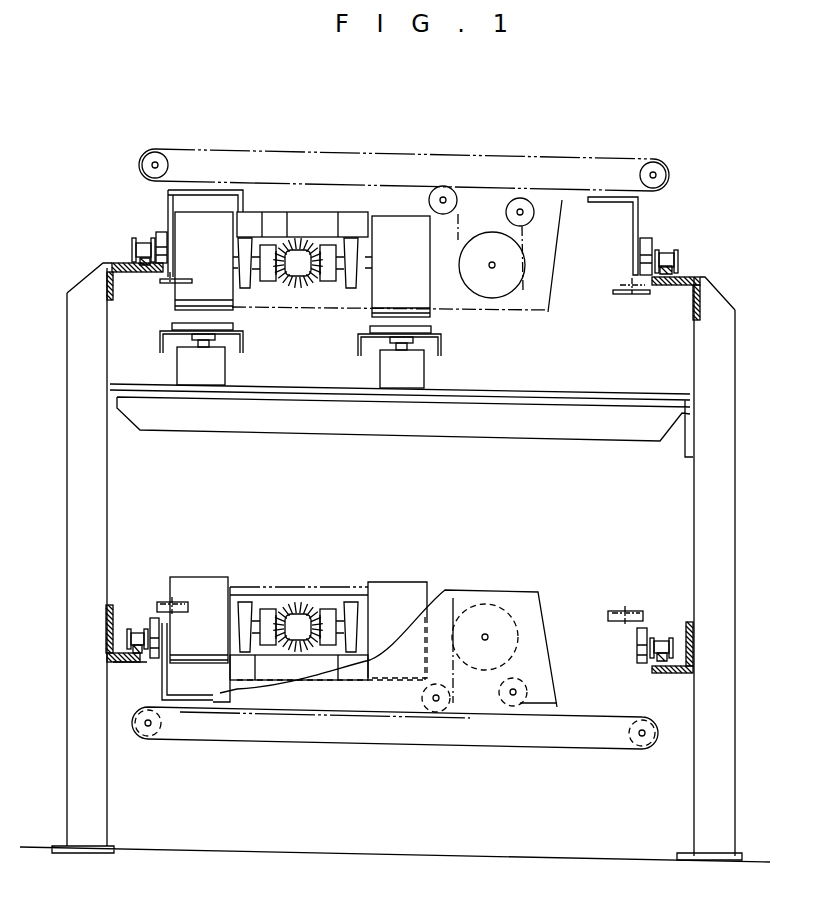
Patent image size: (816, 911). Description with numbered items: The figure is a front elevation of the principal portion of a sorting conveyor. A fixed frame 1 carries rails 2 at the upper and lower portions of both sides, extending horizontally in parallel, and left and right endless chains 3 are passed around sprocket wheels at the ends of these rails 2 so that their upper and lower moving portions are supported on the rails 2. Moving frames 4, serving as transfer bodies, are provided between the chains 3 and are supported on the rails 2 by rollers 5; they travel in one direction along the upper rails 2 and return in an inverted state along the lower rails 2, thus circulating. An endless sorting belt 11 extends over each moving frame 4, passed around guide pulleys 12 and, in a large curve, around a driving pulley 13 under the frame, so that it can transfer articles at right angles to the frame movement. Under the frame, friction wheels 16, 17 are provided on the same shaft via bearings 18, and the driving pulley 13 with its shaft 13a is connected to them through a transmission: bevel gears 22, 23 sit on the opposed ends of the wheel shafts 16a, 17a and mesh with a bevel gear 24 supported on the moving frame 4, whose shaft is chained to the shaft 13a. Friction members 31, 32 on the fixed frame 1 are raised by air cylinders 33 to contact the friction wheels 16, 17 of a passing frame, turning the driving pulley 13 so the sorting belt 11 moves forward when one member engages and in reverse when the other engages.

The fixed frame 1 is at (735, 528).
The rails 2 is at (118, 263).
The endless chains 3 is at (138, 242).
The moving frames 4 is at (668, 188).
The rollers 5 is at (650, 240).
The sorting belt 11 is at (570, 150).
The guide pulleys 12 is at (155, 160).
The driving pulley 13 is at (510, 292).
The shaft 13a is at (495, 265).
The friction wheel 16 is at (207, 212).
The shaft 16a is at (233, 260).
The friction wheel 17 is at (398, 216).
The shaft 17a is at (376, 262).
The bearings 18 is at (246, 289).
The bevel gear 22 is at (276, 243).
The bevel gear 23 is at (332, 243).
The bevel gear 24 is at (300, 240).
The friction member 31 is at (236, 326).
The friction member 32 is at (440, 329).
The air cylinders 33 is at (205, 392).